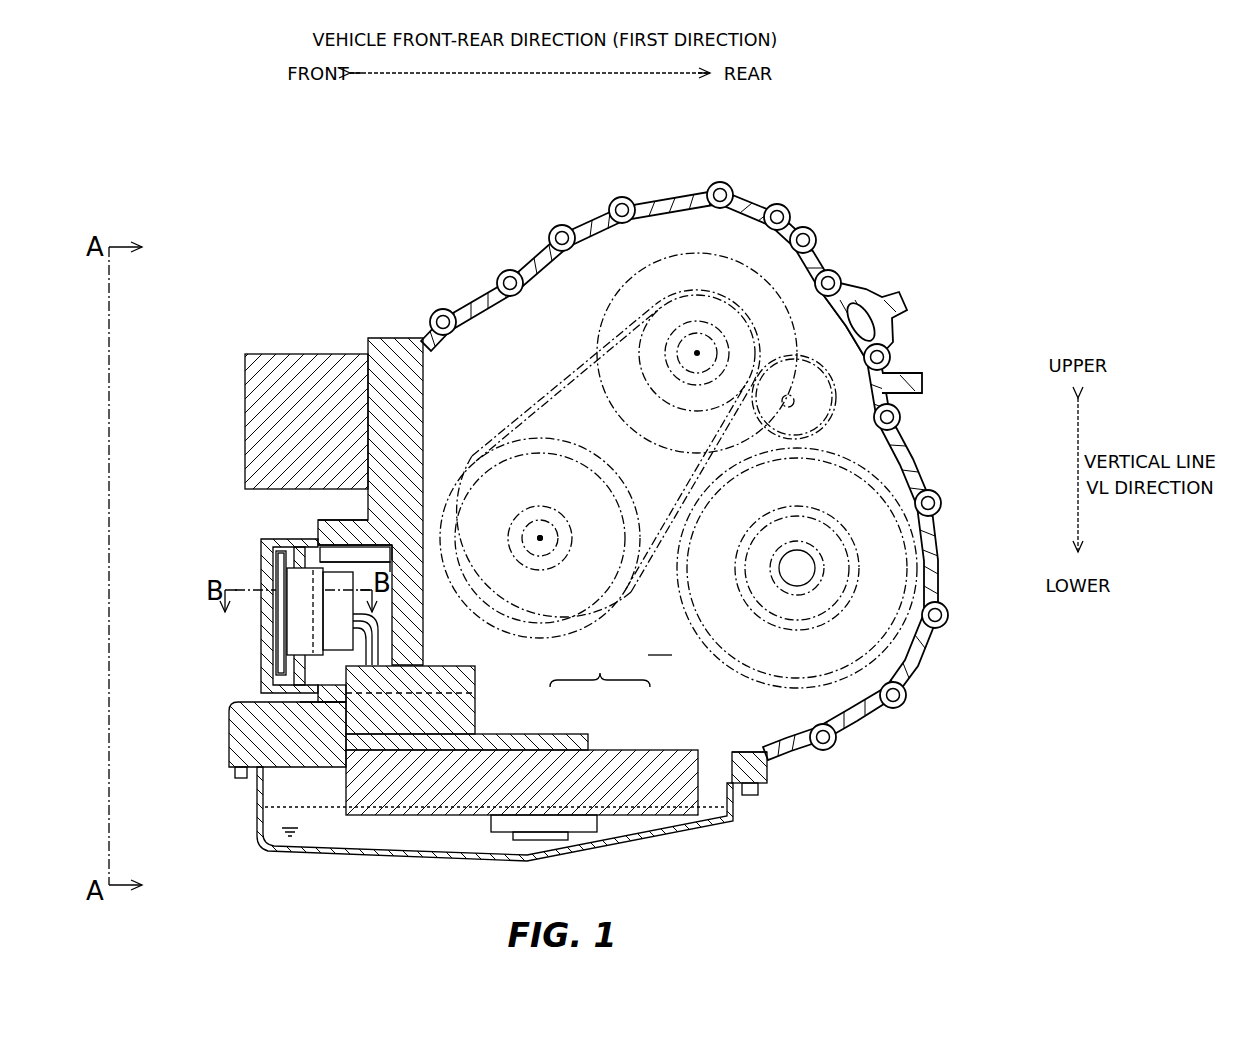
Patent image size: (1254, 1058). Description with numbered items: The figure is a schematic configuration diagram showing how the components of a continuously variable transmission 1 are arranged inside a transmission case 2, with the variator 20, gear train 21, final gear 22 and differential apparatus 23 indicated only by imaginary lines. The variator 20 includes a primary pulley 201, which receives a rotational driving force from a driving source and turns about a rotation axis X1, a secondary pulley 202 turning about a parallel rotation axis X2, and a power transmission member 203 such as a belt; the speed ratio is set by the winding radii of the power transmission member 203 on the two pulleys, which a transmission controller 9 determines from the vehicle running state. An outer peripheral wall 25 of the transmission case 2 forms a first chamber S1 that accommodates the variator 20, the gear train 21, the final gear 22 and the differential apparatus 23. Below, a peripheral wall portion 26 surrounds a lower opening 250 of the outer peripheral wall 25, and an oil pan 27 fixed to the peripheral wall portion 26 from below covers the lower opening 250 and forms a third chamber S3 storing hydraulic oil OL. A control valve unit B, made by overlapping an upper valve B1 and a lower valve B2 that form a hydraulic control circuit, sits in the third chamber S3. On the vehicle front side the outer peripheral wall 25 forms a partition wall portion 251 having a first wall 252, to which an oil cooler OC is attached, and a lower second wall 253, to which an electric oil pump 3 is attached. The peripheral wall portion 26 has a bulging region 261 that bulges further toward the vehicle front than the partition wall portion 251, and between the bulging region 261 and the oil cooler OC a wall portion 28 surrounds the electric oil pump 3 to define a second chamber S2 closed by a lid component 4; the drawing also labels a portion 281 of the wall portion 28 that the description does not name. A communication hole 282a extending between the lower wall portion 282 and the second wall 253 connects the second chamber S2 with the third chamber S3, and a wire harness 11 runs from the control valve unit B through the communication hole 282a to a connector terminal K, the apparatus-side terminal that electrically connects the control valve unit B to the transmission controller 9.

The continuously variable transmission 1 is at (320, 228).
The transmission case 2 is at (880, 728).
The electric oil pump 3 is at (407, 590).
The lid component 4 is at (258, 655).
The transmission controller 9 is at (258, 550).
The wire harness 11 is at (385, 640).
The variator 20 is at (712, 141).
The gear train 21 is at (838, 412).
The final gear 22 is at (895, 496).
The differential apparatus 23 is at (820, 569).
The outer peripheral wall 25 is at (458, 304).
The peripheral wall portion 26 is at (770, 775).
The oil pan 27 is at (725, 822).
The wall portion 28 is at (330, 517).
The primary pulley 201 is at (557, 426).
The secondary pulley 202 is at (683, 250).
The power transmission member 203 is at (627, 316).
The lower opening 250 is at (734, 754).
The partition wall portion 251 is at (553, 445).
The first wall 252 is at (396, 423).
The second wall 253 is at (472, 498).
The bulging region 261 is at (232, 708).
The support surface 281 is at (352, 520).
The lower wall portion 282 is at (392, 700).
The communication hole 282a is at (336, 700).
The oil cooler OC is at (244, 354).
The connector terminal K is at (326, 632).
The first chamber S1 is at (659, 641).
The second chamber S2 is at (392, 528).
The third chamber S3 is at (491, 845).
The hydraulic oil OL is at (298, 842).
The rotation axis X1 is at (541, 540).
The rotation axis X2 is at (696, 355).
The control valve unit B is at (600, 664).
The upper valve B1 is at (560, 740).
The lower valve B2 is at (637, 780).